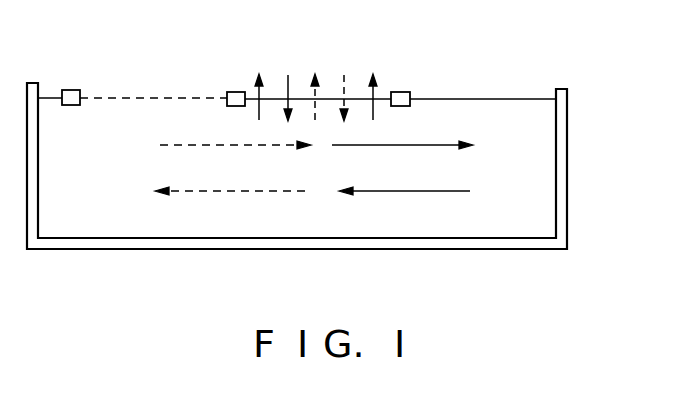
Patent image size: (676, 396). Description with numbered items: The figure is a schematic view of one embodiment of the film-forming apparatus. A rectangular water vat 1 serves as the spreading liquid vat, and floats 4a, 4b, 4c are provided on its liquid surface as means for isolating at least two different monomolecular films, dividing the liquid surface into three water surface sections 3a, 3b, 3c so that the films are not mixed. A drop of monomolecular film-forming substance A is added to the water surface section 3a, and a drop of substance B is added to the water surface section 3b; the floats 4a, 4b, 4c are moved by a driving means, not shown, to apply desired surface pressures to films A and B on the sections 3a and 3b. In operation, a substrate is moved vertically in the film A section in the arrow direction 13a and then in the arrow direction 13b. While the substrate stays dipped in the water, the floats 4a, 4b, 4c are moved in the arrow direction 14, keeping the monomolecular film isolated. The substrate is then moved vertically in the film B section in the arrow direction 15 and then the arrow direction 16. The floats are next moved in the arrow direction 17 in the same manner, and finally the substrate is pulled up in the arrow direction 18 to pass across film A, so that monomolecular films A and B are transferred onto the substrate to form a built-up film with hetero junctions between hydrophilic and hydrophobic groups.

The rectangular water vat 1 is at (567, 192).
The water surface section 3a is at (384, 99).
The water surface section 3b is at (150, 98).
The water surface section 3c is at (502, 99).
The float 4a is at (412, 92).
The float 4b is at (229, 92).
The float 4c is at (67, 90).
The arrow direction 13a is at (263, 84).
The arrow direction 13b is at (293, 73).
The arrow direction 14 is at (333, 145).
The arrow direction 15 is at (316, 84).
The arrow direction 16 is at (345, 73).
The arrow direction 17 is at (298, 192).
The arrow direction 18 is at (374, 84).